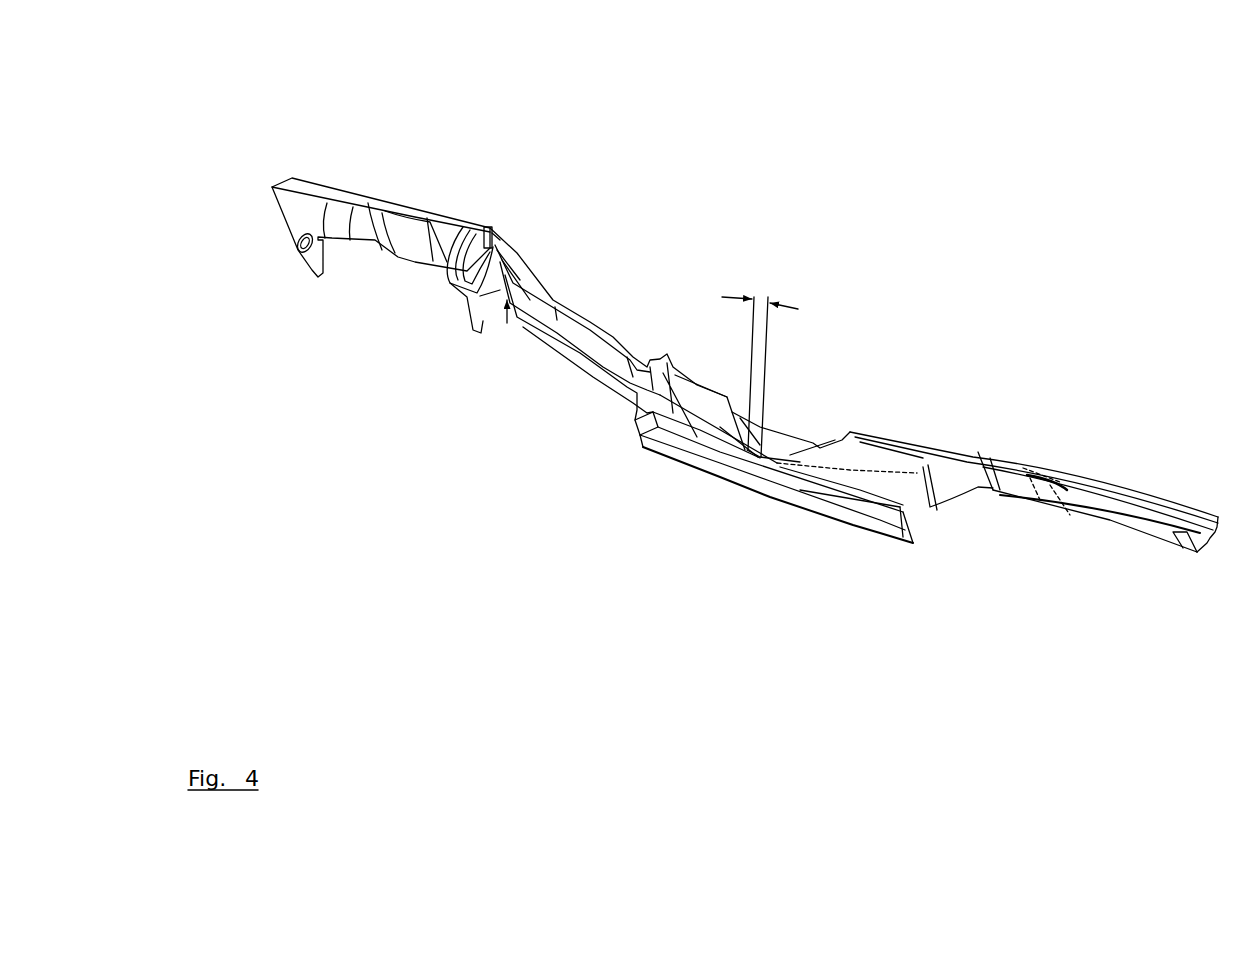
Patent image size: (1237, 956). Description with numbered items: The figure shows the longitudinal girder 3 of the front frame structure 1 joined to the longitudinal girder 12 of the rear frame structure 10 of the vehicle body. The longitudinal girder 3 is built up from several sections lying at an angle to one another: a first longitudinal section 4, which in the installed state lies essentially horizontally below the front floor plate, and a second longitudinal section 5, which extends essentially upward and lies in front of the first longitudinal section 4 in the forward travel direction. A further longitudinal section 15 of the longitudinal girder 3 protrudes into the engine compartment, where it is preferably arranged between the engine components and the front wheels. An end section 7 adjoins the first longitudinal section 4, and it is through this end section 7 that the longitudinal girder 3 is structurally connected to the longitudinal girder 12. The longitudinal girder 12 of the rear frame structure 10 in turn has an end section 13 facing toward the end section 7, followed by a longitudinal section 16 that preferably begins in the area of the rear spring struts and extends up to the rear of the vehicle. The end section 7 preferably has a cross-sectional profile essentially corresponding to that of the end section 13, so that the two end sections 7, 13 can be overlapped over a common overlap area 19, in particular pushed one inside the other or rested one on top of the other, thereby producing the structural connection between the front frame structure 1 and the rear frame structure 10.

The frame structure 1 is at (585, 276).
The longitudinal girder 3 is at (411, 188).
The first longitudinal section 4 is at (605, 345).
The second longitudinal section 5 is at (508, 258).
The end section 7 is at (693, 443).
The rear frame structure 10 is at (900, 445).
The longitudinal girder 12 is at (1016, 445).
The end section 13 is at (840, 483).
The further longitudinal section 15 is at (398, 242).
The longitudinal section 16 is at (1157, 533).
The overlap area 19 is at (762, 292).